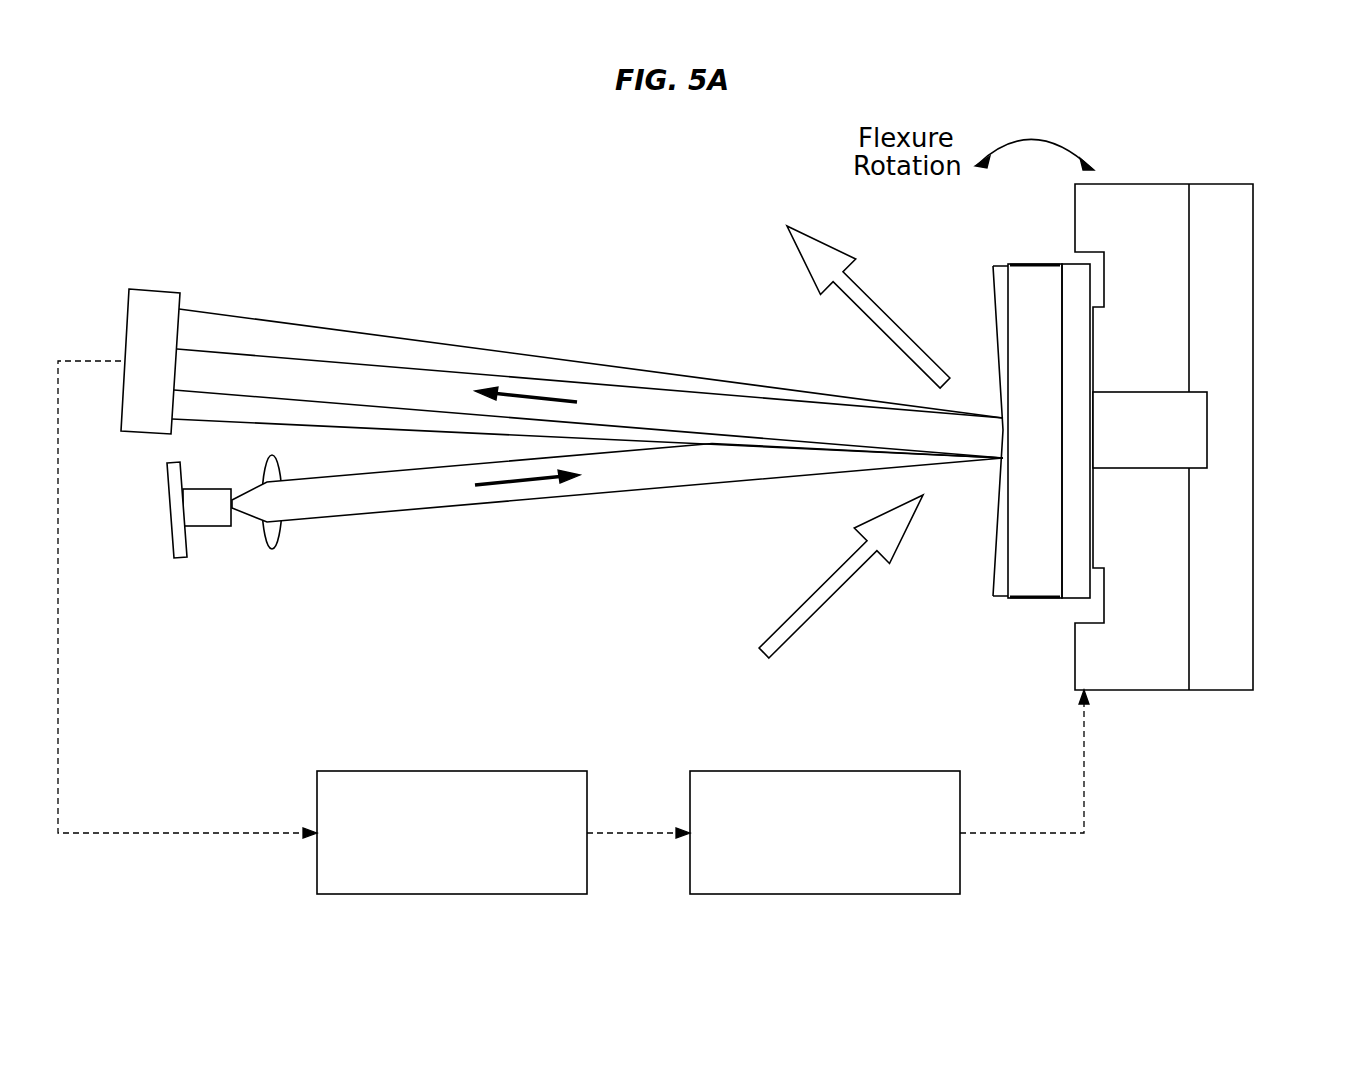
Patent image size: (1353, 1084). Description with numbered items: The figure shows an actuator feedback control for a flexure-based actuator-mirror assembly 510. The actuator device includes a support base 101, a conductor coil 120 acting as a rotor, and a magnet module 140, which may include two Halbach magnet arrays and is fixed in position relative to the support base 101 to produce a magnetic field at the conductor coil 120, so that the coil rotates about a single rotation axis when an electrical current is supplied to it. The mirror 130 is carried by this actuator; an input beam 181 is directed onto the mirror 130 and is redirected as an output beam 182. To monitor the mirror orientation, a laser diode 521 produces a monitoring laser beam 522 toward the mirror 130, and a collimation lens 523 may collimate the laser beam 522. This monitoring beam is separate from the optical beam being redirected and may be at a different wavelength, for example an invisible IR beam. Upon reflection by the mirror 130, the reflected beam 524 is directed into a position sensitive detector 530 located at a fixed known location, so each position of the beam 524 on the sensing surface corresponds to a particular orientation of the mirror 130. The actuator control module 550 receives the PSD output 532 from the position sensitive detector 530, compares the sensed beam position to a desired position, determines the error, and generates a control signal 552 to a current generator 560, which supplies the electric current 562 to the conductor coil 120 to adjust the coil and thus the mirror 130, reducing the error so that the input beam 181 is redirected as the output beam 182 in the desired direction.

The support base 101 is at (1188, 433).
The conductor coil 120 is at (1072, 588).
The mirror 130 is at (992, 563).
The magnet module 140 is at (1162, 343).
The input beam 181 is at (822, 607).
The output beam 182 is at (895, 322).
The flexure-based actuator-mirror assembly 510 is at (1143, 184).
The laser diode 521 is at (203, 526).
The monitoring laser beam 522 is at (597, 490).
The collimation lens 523 is at (280, 552).
The reflected beam 524 is at (542, 388).
The position sensitive detector 530 is at (156, 288).
The PSD output 532 is at (60, 673).
The actuator control module 550 is at (382, 770).
The control signal 552 is at (638, 837).
The current generator 560 is at (756, 770).
The electric current 562 is at (1086, 777).